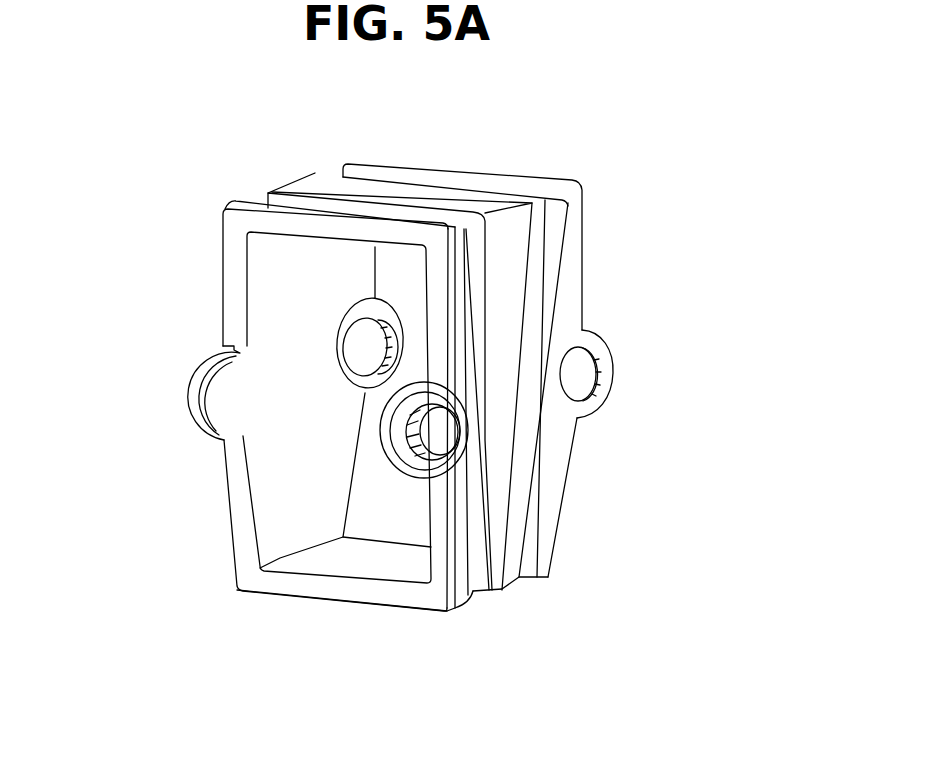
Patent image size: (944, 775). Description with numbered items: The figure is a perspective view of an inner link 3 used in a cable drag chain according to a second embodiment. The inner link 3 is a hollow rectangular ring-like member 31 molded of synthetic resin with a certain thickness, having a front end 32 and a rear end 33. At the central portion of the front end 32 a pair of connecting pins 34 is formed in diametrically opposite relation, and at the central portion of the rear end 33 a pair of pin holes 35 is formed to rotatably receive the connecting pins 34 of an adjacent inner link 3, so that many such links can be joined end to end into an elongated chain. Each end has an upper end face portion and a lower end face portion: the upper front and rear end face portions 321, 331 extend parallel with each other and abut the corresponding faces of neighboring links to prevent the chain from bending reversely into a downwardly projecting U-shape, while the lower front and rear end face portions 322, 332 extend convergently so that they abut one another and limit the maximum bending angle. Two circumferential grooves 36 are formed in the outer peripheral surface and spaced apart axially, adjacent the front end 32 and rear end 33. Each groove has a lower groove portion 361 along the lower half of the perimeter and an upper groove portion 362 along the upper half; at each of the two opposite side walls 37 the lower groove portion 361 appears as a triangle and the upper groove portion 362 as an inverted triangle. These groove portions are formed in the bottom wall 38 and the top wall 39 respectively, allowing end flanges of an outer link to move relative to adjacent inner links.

The inner link 3 is at (437, 399).
The ring-like member 31 is at (437, 399).
The front end 32 is at (271, 437).
The upper front end face portion 321 is at (229, 263).
The lower front end face portion 322 is at (243, 541).
The rear end 33 is at (534, 366).
The upper rear end face portion 331 is at (583, 305).
The lower rear end face portion 332 is at (565, 476).
The connecting pins 34 is at (189, 395).
The pin holes 35 is at (581, 372).
The circumferential grooves 36 is at (634, 419).
The lower groove portion 361 is at (478, 598).
The upper groove portion 362 is at (464, 232).
The side walls 37 is at (589, 261).
The bottom wall 38 is at (389, 614).
The top wall 39 is at (457, 156).